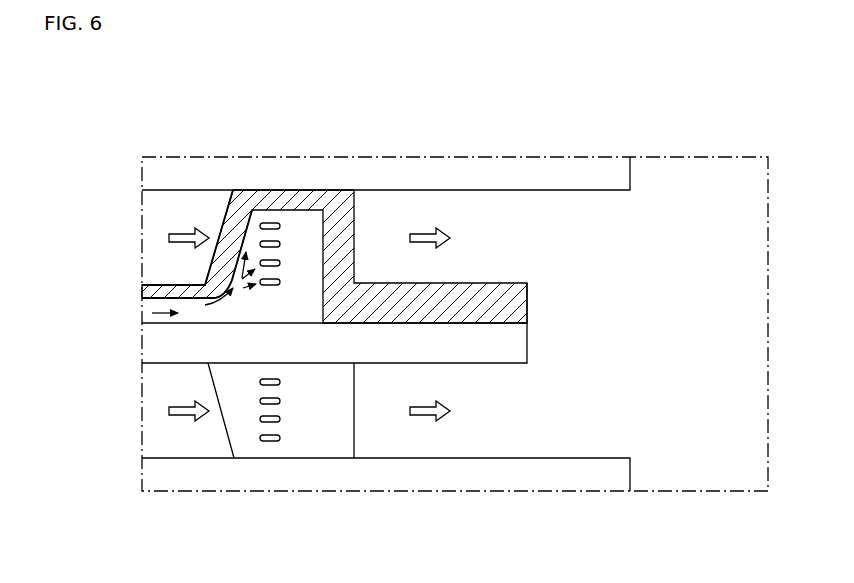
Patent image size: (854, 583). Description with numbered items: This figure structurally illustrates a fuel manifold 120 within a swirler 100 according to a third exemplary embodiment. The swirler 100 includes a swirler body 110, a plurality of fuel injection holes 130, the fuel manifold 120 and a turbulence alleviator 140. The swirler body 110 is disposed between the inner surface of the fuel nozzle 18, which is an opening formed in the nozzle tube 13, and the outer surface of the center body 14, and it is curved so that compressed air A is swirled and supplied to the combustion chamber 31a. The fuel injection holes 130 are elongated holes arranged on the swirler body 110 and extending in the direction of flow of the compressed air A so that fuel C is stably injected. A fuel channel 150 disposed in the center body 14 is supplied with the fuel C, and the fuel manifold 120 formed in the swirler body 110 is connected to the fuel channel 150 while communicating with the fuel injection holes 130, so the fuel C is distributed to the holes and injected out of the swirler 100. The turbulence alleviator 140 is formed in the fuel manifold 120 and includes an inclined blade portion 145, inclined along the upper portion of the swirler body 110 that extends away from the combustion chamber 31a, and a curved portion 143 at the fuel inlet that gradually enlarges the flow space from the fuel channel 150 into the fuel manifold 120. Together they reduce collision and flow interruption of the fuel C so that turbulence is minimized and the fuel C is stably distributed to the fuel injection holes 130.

The nozzle tube 13 is at (422, 175).
The center body 14 is at (163, 343).
The fuel nozzle 18 is at (490, 223).
The combustion chamber 31a is at (681, 319).
The swirler 100 is at (196, 310).
The swirler body 110 is at (327, 418).
The fuel manifold 120 is at (303, 242).
The fuel injection hole 130 is at (240, 258).
The turbulence alleviator 140 is at (187, 172).
The curved portion 143 is at (205, 285).
The inclined blade portion 145 is at (210, 297).
The fuel channel 150 is at (151, 312).
The compressed air A is at (182, 417).
The fuel C is at (234, 312).